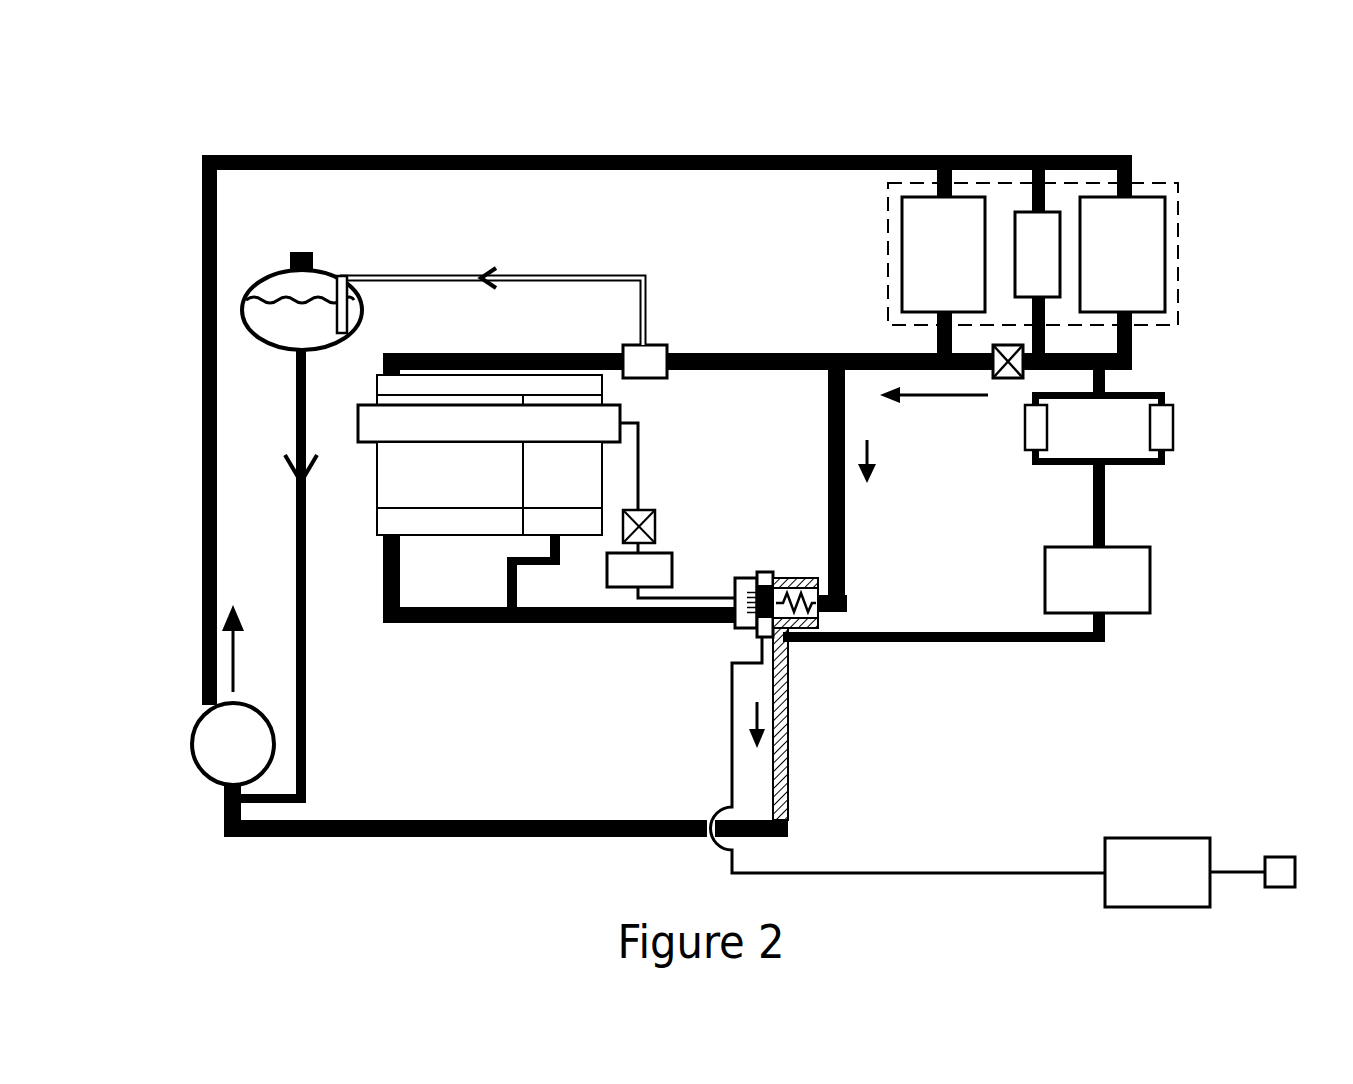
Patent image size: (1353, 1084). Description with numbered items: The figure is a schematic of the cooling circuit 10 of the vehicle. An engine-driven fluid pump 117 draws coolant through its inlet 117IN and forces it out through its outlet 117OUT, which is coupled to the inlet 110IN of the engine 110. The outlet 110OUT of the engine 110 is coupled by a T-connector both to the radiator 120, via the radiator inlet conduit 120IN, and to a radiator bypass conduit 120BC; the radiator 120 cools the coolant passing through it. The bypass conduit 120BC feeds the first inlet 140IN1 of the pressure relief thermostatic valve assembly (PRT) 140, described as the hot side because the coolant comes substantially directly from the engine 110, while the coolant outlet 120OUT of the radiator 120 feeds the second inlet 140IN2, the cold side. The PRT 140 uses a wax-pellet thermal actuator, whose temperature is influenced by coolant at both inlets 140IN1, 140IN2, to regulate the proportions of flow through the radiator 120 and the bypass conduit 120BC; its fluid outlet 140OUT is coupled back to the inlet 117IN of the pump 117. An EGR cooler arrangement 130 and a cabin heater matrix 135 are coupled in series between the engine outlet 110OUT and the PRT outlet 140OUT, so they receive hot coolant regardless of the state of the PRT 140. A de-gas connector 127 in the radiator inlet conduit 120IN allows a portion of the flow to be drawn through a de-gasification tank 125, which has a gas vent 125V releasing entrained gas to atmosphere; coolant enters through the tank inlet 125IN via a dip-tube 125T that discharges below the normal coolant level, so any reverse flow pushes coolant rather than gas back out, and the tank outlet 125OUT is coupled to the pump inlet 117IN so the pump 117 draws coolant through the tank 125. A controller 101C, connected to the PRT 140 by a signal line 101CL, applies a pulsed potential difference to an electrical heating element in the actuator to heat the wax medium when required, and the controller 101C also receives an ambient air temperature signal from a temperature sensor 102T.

The cooling circuit 10 is at (1216, 97).
The engine 110 is at (866, 255).
The inlet of the engine 110IN is at (877, 162).
The outlet of the engine 110OUT is at (875, 360).
The engine-driven fluid pump 117 is at (217, 766).
The inlet of the pump 117IN is at (256, 838).
The outlet of the pump 117OUT is at (209, 681).
The radiator 120 is at (670, 455).
The radiator inlet conduit 120IN is at (797, 360).
The coolant outlet of the radiator 120OUT is at (565, 613).
The radiator bypass conduit 120BC is at (838, 510).
The de-gasification tank 125 is at (327, 270).
The gas vent 125V is at (302, 252).
The inlet of the tank 125IN is at (412, 273).
The dip-tube 125T is at (347, 313).
The outlet of the tank 125OUT is at (300, 396).
The de-gas connector 127 is at (653, 342).
The EGR cooler arrangement 130 is at (1200, 429).
The cabin heater matrix 135 is at (1200, 579).
The pressure relief thermostatic valve assembly (PRT) 140 is at (747, 578).
The first inlet of the PRT 140IN1 is at (838, 578).
The second inlet of the PRT 140IN2 is at (705, 613).
The fluid outlet of the PRT 140OUT is at (782, 663).
The signal line 101CL is at (1002, 870).
The controller 101C is at (1185, 872).
The temperature sensor 102T is at (1285, 857).